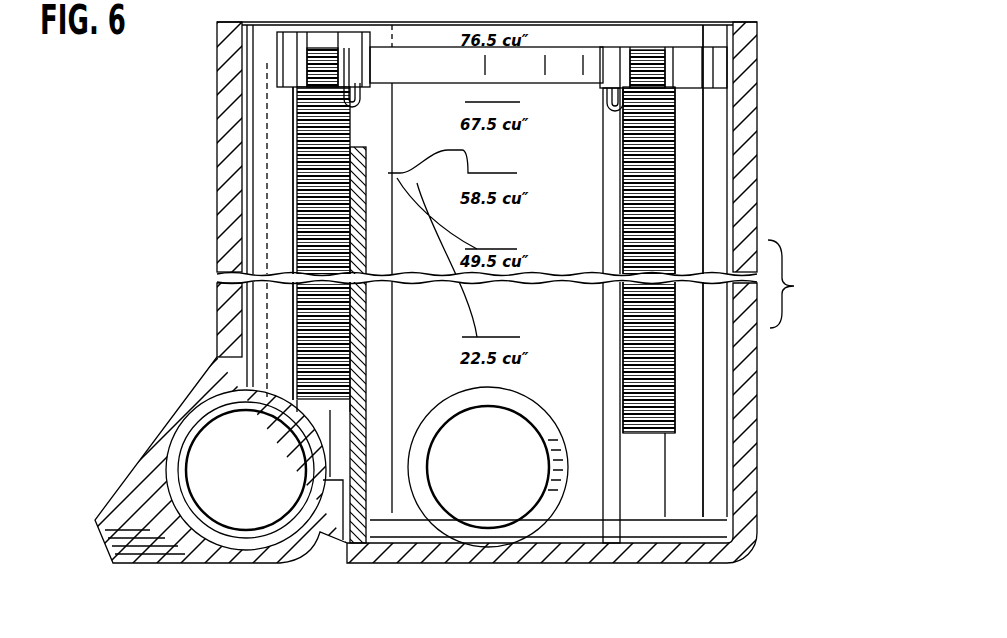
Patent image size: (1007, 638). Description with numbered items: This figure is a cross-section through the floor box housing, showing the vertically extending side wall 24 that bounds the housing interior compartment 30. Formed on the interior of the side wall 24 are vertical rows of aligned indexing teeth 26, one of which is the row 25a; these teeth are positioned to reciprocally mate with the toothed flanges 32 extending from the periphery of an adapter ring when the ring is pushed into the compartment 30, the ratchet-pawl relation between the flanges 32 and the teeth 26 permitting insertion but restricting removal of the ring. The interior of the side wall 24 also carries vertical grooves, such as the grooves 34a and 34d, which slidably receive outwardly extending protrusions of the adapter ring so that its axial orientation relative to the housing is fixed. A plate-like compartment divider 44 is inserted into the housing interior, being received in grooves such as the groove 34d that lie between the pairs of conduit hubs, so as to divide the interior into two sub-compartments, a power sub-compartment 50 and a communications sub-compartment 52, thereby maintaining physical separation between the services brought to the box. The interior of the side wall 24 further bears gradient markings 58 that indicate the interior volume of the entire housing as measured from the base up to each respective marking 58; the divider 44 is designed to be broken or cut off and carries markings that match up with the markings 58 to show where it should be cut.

The side wall 24 is at (743, 382).
The row of indexing teeth 25a is at (660, 150).
The indexing teeth 26 is at (353, 185).
The housing interior compartment 30 is at (705, 214).
The toothed flanges 32 is at (303, 57).
The vertical groove 34a is at (608, 138).
The vertical groove 34d is at (357, 127).
The compartment divider 44 is at (232, 357).
The power sub-compartment 50 is at (582, 475).
The communications sub-compartment 52 is at (275, 297).
The gradient markings 58 is at (300, 200).